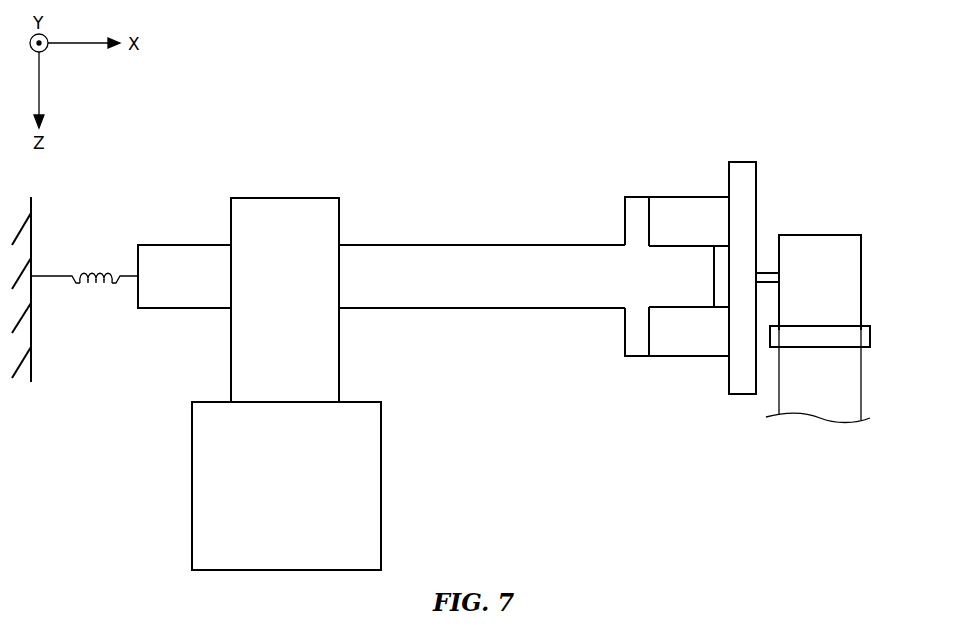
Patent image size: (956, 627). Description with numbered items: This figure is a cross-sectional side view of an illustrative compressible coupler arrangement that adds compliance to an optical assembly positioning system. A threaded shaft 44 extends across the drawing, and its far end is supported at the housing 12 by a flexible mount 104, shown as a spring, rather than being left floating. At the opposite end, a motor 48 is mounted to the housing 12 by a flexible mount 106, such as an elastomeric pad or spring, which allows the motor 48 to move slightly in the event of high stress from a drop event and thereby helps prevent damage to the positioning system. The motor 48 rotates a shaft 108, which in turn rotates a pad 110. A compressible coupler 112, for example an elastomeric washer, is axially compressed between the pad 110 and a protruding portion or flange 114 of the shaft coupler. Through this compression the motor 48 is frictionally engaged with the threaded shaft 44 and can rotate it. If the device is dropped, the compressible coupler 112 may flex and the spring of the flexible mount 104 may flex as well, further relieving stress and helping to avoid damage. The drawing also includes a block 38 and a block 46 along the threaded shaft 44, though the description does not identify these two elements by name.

The housing 12 is at (31, 205).
The motor 38 is at (381, 485).
The threaded shaft 44 is at (186, 255).
The coupling block 46 is at (285, 210).
The motor 48 is at (820, 243).
The flexible mount 104 is at (93, 290).
The flexible mount 106 is at (856, 335).
The shaft 108 is at (766, 278).
The pad 110 is at (739, 170).
The compressible coupler 112 is at (689, 207).
The protruding portion (flange) 114 is at (633, 217).